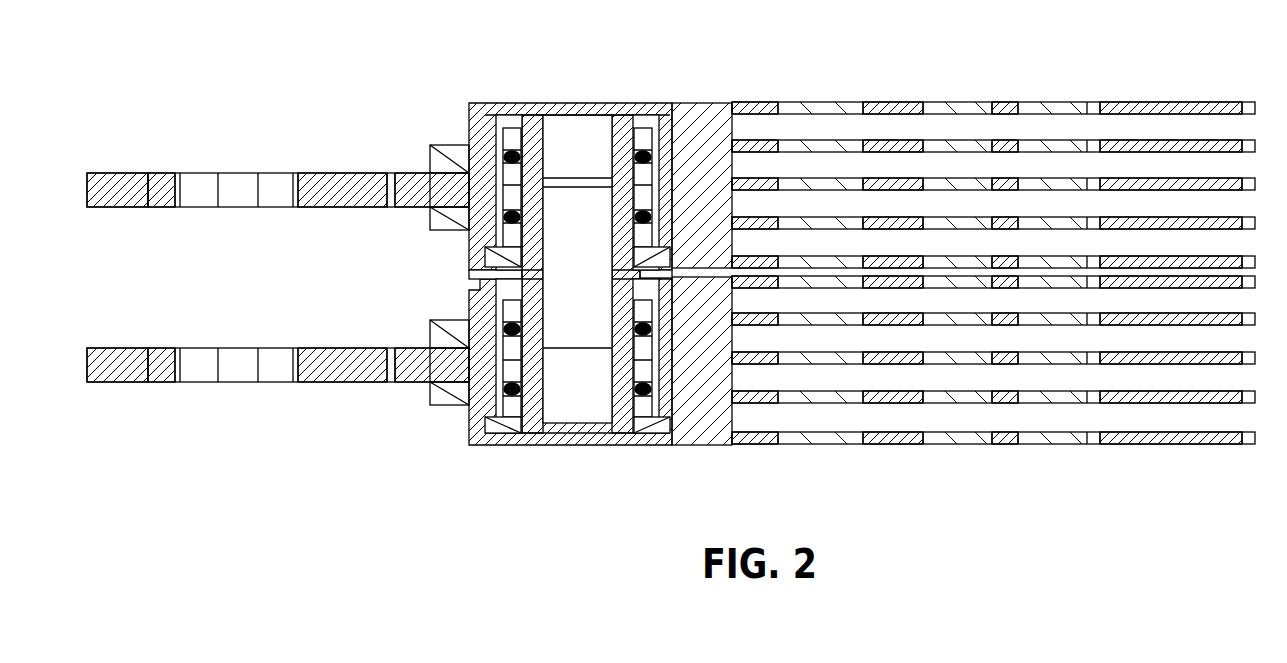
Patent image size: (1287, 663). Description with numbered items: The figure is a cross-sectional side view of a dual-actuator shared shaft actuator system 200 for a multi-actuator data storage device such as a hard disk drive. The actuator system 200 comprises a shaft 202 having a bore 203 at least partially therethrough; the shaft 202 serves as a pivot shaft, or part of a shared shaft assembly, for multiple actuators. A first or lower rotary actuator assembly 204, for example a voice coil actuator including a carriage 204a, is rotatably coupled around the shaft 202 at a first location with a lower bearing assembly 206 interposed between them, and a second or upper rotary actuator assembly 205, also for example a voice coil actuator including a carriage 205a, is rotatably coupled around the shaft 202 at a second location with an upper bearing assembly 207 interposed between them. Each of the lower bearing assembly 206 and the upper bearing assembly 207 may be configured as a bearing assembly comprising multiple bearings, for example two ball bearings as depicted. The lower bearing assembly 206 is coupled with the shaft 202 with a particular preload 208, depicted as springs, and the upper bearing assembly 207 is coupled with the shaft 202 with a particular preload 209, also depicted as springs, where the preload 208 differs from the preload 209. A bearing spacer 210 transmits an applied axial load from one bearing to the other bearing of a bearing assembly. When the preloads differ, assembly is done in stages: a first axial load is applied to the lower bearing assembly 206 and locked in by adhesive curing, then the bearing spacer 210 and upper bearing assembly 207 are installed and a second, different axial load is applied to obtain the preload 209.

The actuator system 200 is at (875, 70).
The shaft 202 is at (528, 140).
The bore 203 is at (578, 140).
The lower rotary actuator assembly 204 is at (363, 370).
The carriage 204a is at (711, 433).
The upper rotary actuator assembly 205 is at (363, 181).
The carriage 205a is at (703, 110).
The lower bearing assembly 206 is at (628, 427).
The upper bearing assembly 207 is at (593, 103).
The preload 208 is at (476, 414).
The preload 209 is at (470, 150).
The bearing spacer 210 is at (479, 274).